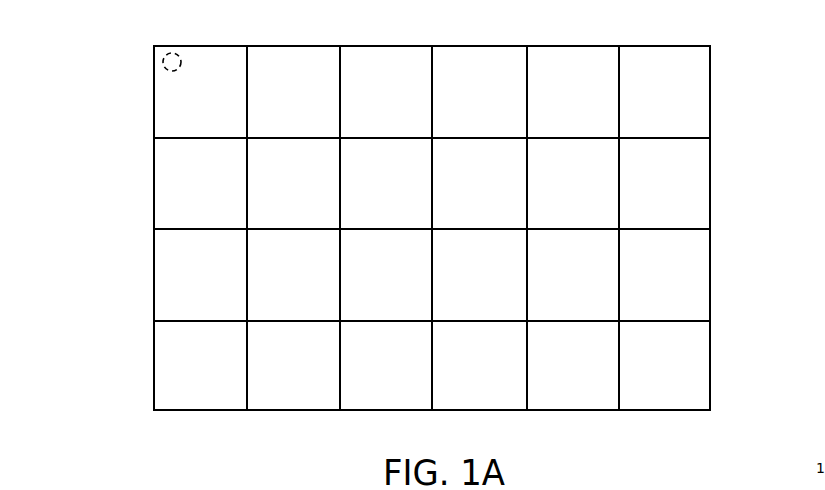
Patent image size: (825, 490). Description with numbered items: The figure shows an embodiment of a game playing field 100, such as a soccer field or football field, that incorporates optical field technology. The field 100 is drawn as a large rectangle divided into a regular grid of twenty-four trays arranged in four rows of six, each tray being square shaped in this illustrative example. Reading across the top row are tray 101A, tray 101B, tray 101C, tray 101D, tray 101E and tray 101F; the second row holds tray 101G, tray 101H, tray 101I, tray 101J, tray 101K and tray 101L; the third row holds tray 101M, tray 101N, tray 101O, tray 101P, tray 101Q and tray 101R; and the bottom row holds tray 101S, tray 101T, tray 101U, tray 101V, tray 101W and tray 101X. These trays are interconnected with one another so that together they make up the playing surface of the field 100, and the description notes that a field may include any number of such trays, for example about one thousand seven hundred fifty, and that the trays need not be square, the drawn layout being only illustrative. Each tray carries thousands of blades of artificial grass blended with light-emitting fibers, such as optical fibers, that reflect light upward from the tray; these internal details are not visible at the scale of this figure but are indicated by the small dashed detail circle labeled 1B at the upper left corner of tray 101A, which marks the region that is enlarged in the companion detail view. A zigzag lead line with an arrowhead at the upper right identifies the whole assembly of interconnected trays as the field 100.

The game playing field 100 is at (750, 163).
The detail region shown in FIG. 1B is at (163, 62).
The tray 101A is at (175, 106).
The tray 101B is at (268, 106).
The tray 101C is at (360, 106).
The tray 101D is at (454, 106).
The tray 101E is at (550, 106).
The tray 101F is at (641, 106).
The tray 101G is at (175, 198).
The tray 101H is at (268, 198).
The tray 101I is at (366, 198).
The tray 101J is at (456, 198).
The tray 101K is at (548, 198).
The tray 101L is at (641, 198).
The tray 101M is at (173, 289).
The tray 101N is at (268, 289).
The tray 101O is at (360, 289).
The tray 101P is at (454, 289).
The tray 101Q is at (548, 289).
The tray 101R is at (639, 289).
The tray 101S is at (175, 380).
The tray 101T is at (270, 380).
The tray 101U is at (360, 380).
The tray 101V is at (454, 380).
The tray 101W is at (546, 380).
The tray 101X is at (639, 380).